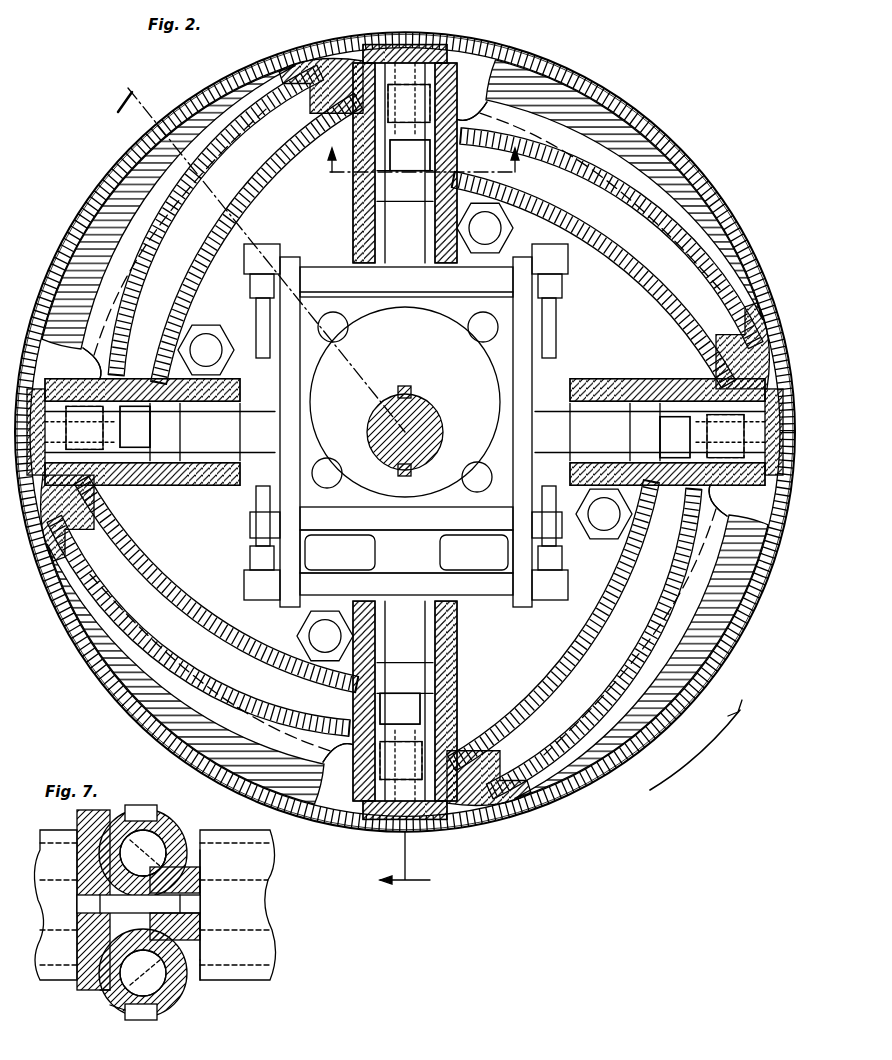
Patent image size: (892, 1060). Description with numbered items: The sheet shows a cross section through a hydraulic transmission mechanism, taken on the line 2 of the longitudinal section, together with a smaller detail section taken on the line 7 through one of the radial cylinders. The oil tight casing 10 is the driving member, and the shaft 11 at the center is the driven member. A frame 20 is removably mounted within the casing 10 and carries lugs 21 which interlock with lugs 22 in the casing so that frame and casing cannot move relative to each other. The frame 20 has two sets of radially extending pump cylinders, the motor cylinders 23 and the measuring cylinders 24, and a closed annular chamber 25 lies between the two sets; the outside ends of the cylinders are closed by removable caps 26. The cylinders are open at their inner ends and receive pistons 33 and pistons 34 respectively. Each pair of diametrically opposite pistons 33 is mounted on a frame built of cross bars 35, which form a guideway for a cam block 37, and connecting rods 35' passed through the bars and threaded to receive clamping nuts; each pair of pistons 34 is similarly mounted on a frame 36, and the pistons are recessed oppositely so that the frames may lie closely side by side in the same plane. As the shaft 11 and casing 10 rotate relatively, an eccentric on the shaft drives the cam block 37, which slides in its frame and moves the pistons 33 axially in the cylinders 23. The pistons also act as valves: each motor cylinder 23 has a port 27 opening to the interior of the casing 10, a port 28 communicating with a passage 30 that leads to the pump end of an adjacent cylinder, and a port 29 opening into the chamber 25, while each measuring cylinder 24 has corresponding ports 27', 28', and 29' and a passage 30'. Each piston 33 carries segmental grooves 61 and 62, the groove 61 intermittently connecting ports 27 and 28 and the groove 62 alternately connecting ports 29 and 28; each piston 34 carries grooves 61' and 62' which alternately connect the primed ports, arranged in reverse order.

In FIG. 2, the casing 10 is at (632, 128).
In FIG. 2, the annular chamber 25 is at (688, 150).
In FIG. 7, the annular chamber 25 is at (206, 905).
In FIG. 2, the frame 20 is at (762, 640).
In FIG. 7, the frame 20 is at (282, 982).
In FIG. 2, the lugs 22 is at (292, 66).
In FIG. 2, the lugs 21 is at (328, 50).
In FIG. 2, the passage 30 is at (405, 432).
In FIG. 7, the passage 30 is at (228, 885).
In FIG. 2, the measuring cylinders 24 is at (392, 60).
In FIG. 7, the measuring cylinders 24 is at (80, 836).
In FIG. 2, the removable caps 26 is at (432, 52).
In FIG. 2, the motor cylinders 23 is at (362, 240).
In FIG. 7, the motor cylinders 23 is at (110, 830).
In FIG. 2, the segmental groove 61 is at (403, 432).
In FIG. 7, the segmental groove 61 is at (185, 844).
In FIG. 2, the segmental groove 62 is at (405, 432).
In FIG. 7, the segmental groove 62 is at (165, 830).
In FIG. 2, the port 29 is at (405, 432).
In FIG. 7, the port 29 is at (198, 874).
In FIG. 2, the port 28 is at (405, 432).
In FIG. 7, the port 28 is at (173, 835).
In FIG. 2, the cross bars 35 is at (408, 422).
In FIG. 2, the connecting rods 35' is at (410, 432).
In FIG. 2, the cam block 37 is at (530, 355).
In FIG. 2, the shaft 11 is at (438, 428).
In FIG. 2, the frame 36 is at (405, 432).
In FIG. 2, the section line 7- 7 is at (319, 259).
In FIG. 2, the section line 2- 2 is at (405, 865).
In FIG. 7, the port 27 is at (143, 840).
In FIG. 7, the port 29' is at (200, 931).
In FIG. 7, the port 27' is at (143, 988).
In FIG. 7, the port 28' is at (171, 983).
In FIG. 7, the segmental groove 62' is at (138, 1002).
In FIG. 7, the passage 30' is at (230, 992).
In FIG. 7, the segmental groove 61' is at (140, 904).
In FIG. 7, the pistons 34 is at (100, 984).
In FIG. 7, the pistons 33 is at (116, 1010).